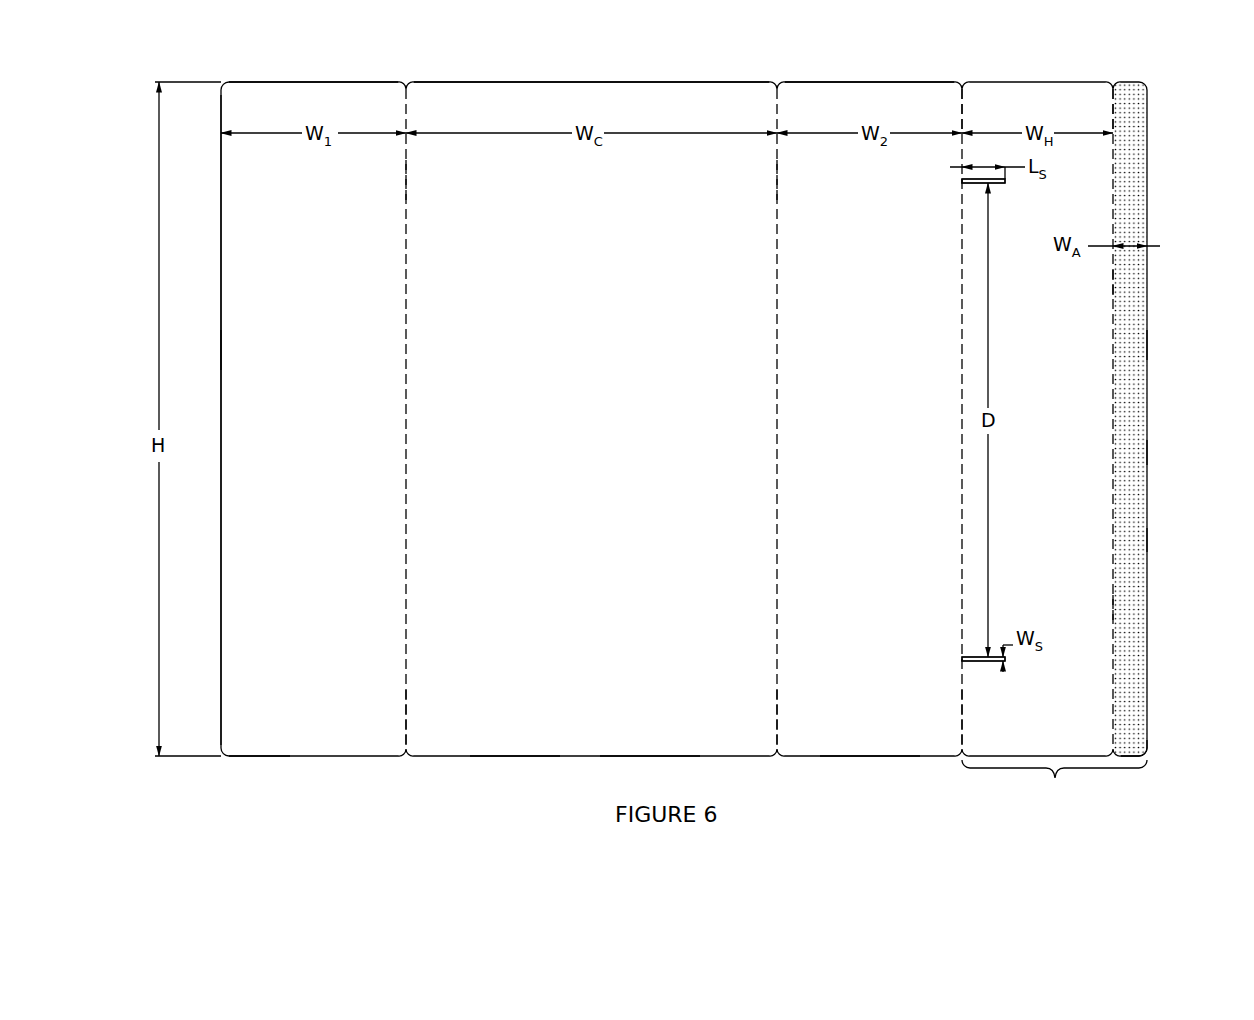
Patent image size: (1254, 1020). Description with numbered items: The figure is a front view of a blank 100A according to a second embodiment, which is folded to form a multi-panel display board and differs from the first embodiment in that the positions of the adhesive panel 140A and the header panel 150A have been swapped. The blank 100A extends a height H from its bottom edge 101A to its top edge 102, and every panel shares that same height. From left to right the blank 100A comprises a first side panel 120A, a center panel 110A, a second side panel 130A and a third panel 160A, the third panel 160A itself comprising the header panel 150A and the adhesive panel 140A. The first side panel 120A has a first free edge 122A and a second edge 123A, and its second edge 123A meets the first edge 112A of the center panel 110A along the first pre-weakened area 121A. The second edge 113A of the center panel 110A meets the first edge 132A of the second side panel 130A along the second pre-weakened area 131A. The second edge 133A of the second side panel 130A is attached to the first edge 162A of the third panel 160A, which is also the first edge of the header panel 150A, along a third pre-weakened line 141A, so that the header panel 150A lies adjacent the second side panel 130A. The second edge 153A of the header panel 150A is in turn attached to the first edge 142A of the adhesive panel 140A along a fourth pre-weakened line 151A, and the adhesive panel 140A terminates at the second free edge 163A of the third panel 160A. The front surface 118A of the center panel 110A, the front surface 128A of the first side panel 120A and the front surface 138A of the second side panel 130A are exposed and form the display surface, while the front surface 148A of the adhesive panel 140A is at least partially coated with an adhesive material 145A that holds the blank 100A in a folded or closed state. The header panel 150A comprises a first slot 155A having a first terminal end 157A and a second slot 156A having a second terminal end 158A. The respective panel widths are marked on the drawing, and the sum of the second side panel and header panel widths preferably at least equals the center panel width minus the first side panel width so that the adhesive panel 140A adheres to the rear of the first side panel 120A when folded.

The blank 100A is at (217, 78).
The top edge 102 is at (560, 82).
The bottom edge 101A is at (618, 757).
The center panel 110A is at (644, 430).
The first edge of center panel 112A is at (405, 180).
The second edge of center panel 113A is at (778, 185).
The front surface of center panel 118A is at (521, 703).
The first side panel 120A is at (340, 430).
The first pre-weakened area 121A is at (406, 698).
The first free edge of first side panel 122A is at (221, 352).
The second edge of first side panel 123A is at (407, 185).
The front surface of first side panel 128A is at (252, 704).
The second side panel 130A is at (893, 430).
The second pre-weakened area 131A is at (776, 700).
The first edge of second side panel 132A is at (776, 167).
The second edge of second side panel 133A is at (963, 113).
The front surface of second side panel 138A is at (890, 697).
The adhesive panel 140A is at (1138, 452).
The third pre-weakened line 141A is at (961, 207).
The first edge of adhesive panel 142A is at (1115, 722).
The adhesive material 145A is at (1140, 540).
The front surface of adhesive panel 148A is at (1129, 105).
The header panel 150A is at (1075, 430).
The fourth pre-weakened line 151A is at (1113, 285).
The second edge of header panel 153A is at (1113, 612).
The first slot 155A is at (997, 184).
The second slot 156A is at (984, 662).
The first terminal end 157A is at (1004, 182).
The second terminal end 158A is at (1005, 659).
The third panel 160A is at (1054, 783).
The first edge of third panel 162A is at (961, 683).
The second free edge of third panel 163A is at (1147, 343).